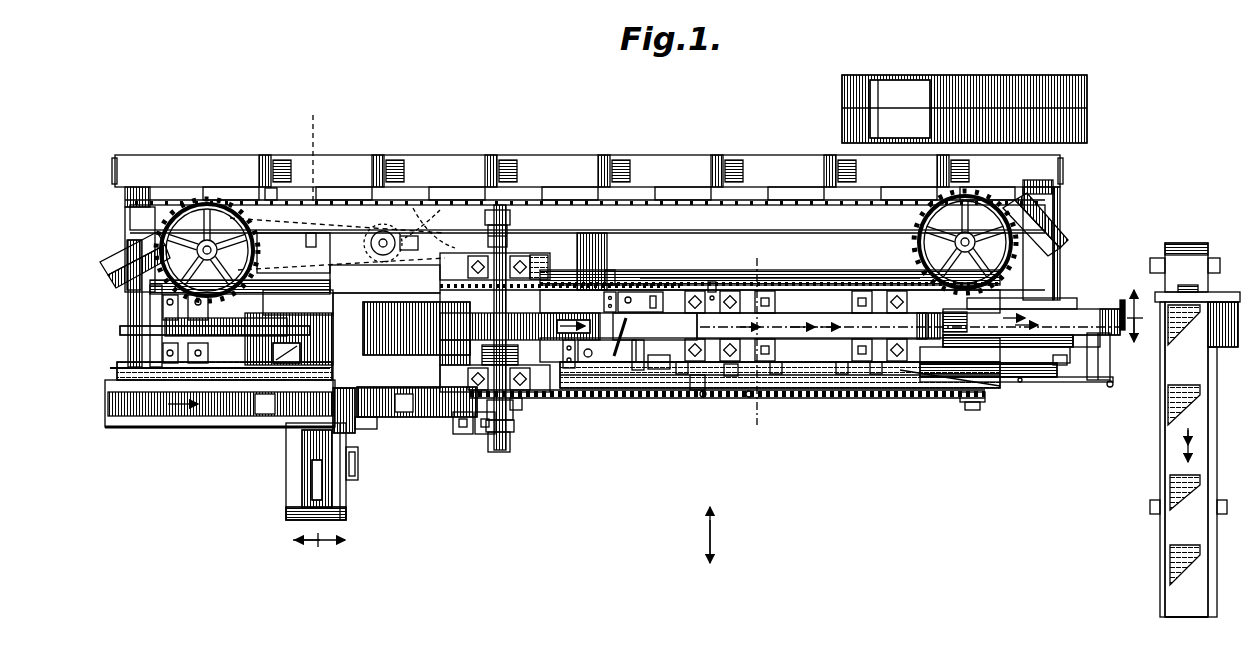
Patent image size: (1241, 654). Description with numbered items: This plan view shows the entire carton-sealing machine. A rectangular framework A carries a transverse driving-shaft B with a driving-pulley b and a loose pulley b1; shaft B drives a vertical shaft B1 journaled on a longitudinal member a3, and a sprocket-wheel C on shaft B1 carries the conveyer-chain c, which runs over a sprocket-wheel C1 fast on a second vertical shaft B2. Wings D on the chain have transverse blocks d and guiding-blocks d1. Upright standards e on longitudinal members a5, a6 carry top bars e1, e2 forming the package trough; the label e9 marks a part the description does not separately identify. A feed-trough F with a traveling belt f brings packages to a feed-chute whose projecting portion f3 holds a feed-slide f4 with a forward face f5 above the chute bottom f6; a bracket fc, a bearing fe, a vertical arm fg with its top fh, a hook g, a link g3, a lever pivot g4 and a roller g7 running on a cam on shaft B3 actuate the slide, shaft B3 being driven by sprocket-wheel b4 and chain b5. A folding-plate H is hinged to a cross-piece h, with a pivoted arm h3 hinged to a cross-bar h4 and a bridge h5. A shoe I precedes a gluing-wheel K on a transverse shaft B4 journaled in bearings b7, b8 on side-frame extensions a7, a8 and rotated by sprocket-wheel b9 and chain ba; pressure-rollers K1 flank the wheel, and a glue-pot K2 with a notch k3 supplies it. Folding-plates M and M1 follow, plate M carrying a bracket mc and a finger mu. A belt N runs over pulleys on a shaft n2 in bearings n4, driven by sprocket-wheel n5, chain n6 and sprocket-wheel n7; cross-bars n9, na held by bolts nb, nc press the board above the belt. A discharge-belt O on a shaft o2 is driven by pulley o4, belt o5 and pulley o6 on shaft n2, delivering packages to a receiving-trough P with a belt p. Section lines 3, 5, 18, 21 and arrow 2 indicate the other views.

The rectangular framework A is at (580, 146).
The conveyer wings D is at (262, 172).
The longitudinal guiding-blocks d1 is at (580, 188).
The transverse vertical blocks d is at (830, 160).
The longitudinal frame member a3 is at (587, 217).
The driving-pulley b is at (964, 109).
The loose pulley b1 is at (892, 109).
The transverse driving-shaft B is at (966, 186).
The sprocket-wheel C is at (190, 204).
The conveyer-chain c is at (777, 196).
The vertical shaft B2 is at (215, 250).
The vertical shaft B1 is at (960, 242).
The transverse shaft B4 is at (505, 246).
The sprocket-wheel C1 is at (262, 258).
The hook g is at (362, 246).
The cam shaft B3 is at (385, 279).
The sprocket-wheel b4 is at (420, 246).
The bearing b8 is at (478, 250).
The section line 18 is at (500, 208).
The side frame extension a7 is at (495, 322).
The sprocket-wheel n7 is at (527, 263).
The longitudinal top bar e2 is at (631, 302).
The shoe I is at (568, 316).
The projecting finger mu is at (603, 310).
The laterally-reciprocating folding-plate M1 is at (640, 291).
The chain n6 is at (610, 284).
The bearings n4 is at (712, 294).
The sprocket-wheel n5 is at (738, 287).
The bolt nb is at (773, 291).
The longitudinal frame member a5 is at (800, 278).
The section line 21 is at (762, 338).
The belt N is at (908, 326).
The discharge-belt O is at (1034, 316).
The section line 3 is at (108, 331).
The longitudinal top bar e1 is at (770, 350).
The upright standards e is at (242, 360).
The longitudinal frame member a6 is at (815, 368).
The folding-plate H is at (328, 320).
The glue-pot K2 is at (416, 328).
The pressure-roller K1 is at (289, 342).
The gluing-wheel K is at (562, 396).
The laterally-reciprocating folding-plate M is at (600, 372).
The bracket mc is at (660, 378).
The pin e9 is at (150, 301).
The cross-bar h4 is at (150, 316).
The cross-piece h is at (225, 401).
The bridge h5 is at (200, 375).
The pivoted arm h3 is at (250, 365).
The feed-trough F is at (180, 428).
The traveling belt f is at (292, 402).
The arm top fh is at (344, 392).
The vertical arm fg is at (362, 412).
The forward face f5 is at (300, 433).
The feed-slide f4 is at (302, 473).
The chute bottom f6 is at (304, 508).
The laterally-projecting portion f3 is at (346, 492).
The bearing fe is at (358, 466).
The section line 5 is at (326, 329).
The notch k3 is at (456, 396).
The side frame extension a8 is at (456, 405).
The bearing b7 is at (515, 402).
The sprocket-wheel b9 is at (515, 422).
The chain ba is at (698, 399).
The pulley shaft n2 is at (690, 372).
The pulley o6 is at (703, 400).
The cross-bar n9 is at (731, 386).
The belt o5 is at (749, 398).
The bolt nc is at (780, 372).
The cross-bar na is at (842, 372).
The bracket fc is at (978, 405).
The shaft o2 is at (1110, 364).
The pulley o4 is at (1110, 387).
The arrow 2 is at (702, 535).
The receiving-trough P is at (1160, 431).
The traveling belt p is at (1185, 618).
The chain b5 is at (290, 188).
The link g3 is at (328, 183).
The roller g7 is at (413, 208).
The lever pivot g4 is at (440, 210).